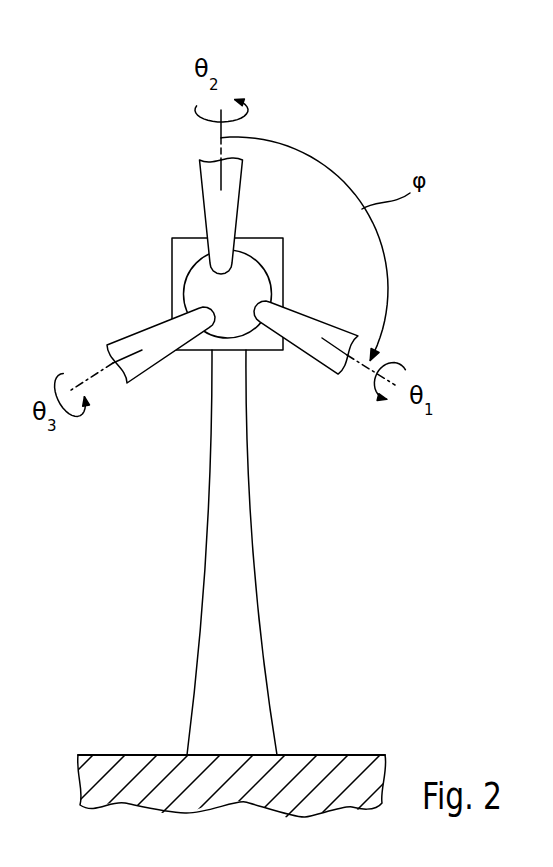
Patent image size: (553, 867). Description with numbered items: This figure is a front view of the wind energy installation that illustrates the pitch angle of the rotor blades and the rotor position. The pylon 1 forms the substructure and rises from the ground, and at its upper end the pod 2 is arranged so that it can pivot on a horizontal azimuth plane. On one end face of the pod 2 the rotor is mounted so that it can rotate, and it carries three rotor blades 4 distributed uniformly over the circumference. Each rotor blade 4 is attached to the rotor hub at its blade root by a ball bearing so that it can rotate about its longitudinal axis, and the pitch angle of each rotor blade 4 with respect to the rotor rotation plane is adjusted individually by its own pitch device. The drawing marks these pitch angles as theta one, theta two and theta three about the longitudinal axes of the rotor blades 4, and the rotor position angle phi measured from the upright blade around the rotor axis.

The pylon 1 is at (248, 593).
The pod 2 is at (180, 252).
The rotor blade 4 is at (310, 318).